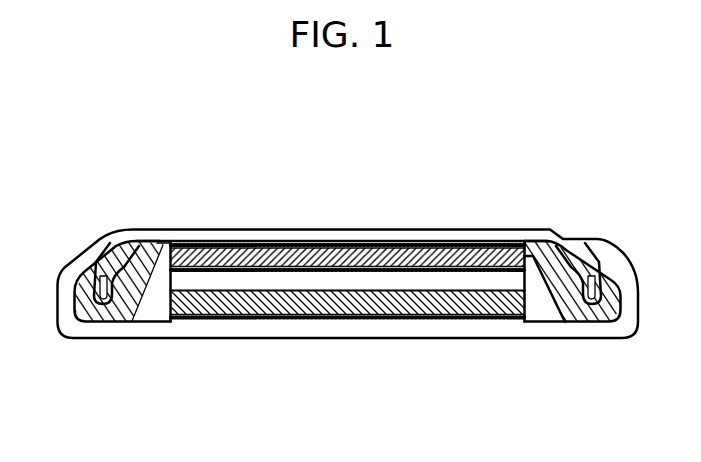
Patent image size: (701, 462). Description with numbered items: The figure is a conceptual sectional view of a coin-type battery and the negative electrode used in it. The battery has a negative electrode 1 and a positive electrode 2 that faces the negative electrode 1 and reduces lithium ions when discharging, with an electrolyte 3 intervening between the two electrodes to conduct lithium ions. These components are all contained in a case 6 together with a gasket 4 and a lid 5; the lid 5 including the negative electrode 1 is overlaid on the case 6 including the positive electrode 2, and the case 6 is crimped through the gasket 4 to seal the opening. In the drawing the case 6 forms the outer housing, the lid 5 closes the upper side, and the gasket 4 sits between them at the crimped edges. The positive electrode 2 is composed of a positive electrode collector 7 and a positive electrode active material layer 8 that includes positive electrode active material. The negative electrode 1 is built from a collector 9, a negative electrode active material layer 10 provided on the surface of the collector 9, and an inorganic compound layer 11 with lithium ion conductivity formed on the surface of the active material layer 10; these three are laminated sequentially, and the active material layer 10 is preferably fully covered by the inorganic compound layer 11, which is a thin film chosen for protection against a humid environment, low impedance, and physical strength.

The negative electrode 1 is at (341, 196).
The positive electrode 2 is at (348, 368).
The electrolyte 3 is at (428, 286).
The gasket 4 is at (574, 256).
The lid 5 is at (354, 239).
The case 6 is at (632, 289).
The positive electrode collector 7 is at (225, 323).
The positive electrode active material layer 8 is at (220, 393).
The collector 9 is at (207, 246).
The negative electrode active material layer 10 is at (259, 252).
The inorganic compound layer 11 is at (157, 175).